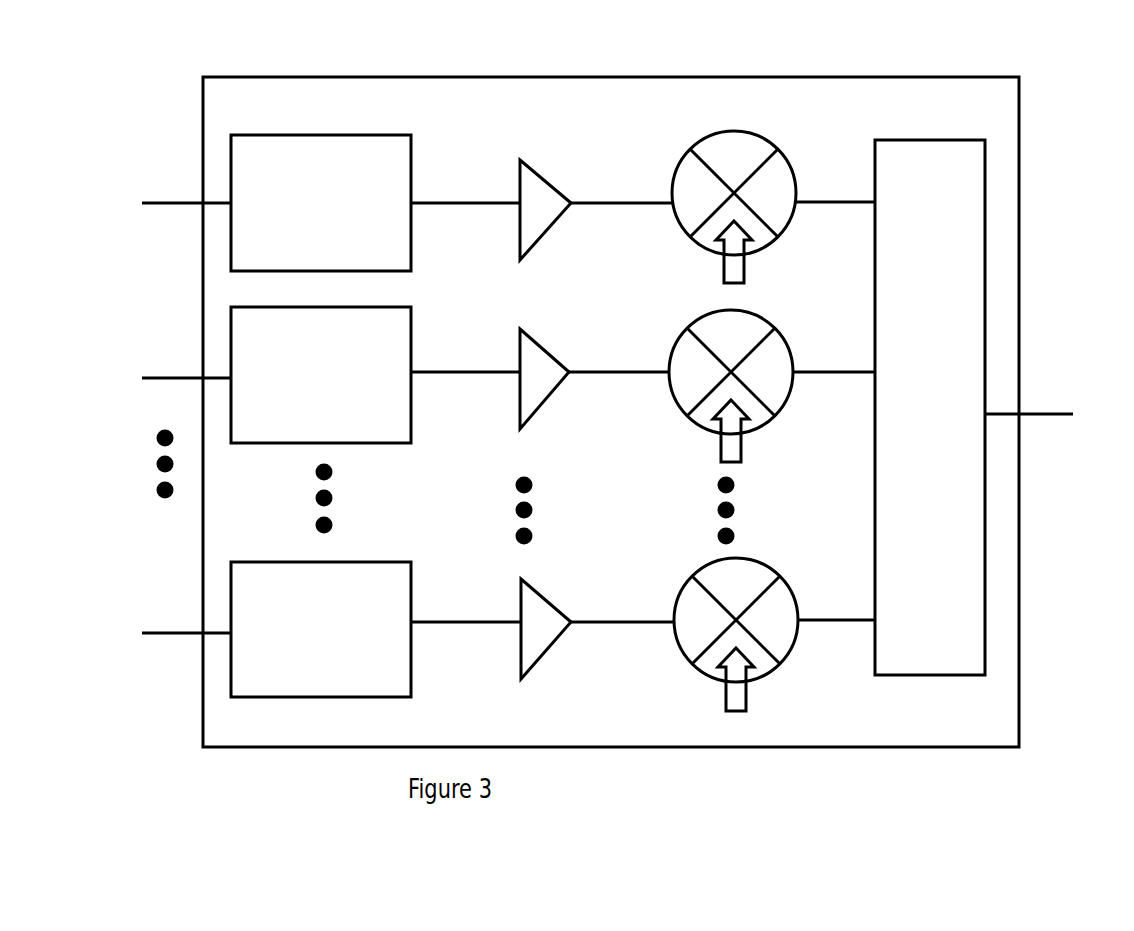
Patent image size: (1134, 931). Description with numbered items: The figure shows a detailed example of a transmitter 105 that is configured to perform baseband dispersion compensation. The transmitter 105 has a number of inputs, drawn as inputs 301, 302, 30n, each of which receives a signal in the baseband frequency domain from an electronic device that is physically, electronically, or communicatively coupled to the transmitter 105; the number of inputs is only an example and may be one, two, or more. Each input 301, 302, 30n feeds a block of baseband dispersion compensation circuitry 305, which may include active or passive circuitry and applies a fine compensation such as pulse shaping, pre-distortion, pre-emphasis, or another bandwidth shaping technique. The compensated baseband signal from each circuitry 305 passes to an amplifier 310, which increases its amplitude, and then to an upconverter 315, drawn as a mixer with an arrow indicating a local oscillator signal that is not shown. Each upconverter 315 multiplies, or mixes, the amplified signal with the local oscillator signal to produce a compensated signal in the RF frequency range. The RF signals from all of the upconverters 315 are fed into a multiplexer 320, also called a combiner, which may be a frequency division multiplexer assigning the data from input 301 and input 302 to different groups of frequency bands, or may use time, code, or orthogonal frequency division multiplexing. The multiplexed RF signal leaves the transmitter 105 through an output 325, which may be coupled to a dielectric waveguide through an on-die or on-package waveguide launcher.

The transmitter 105 is at (632, 763).
The input 301 is at (159, 201).
The input 302 is at (176, 377).
The input 30n is at (184, 632).
The baseband dispersion compensation circuitry 305 is at (375, 416).
The amplifier 310 is at (545, 180).
The upconverter 315 is at (770, 140).
The multiplexer 320 is at (930, 407).
The output 325 is at (1034, 412).